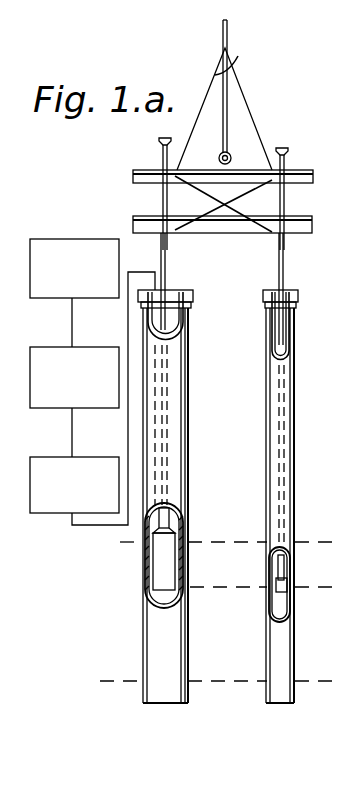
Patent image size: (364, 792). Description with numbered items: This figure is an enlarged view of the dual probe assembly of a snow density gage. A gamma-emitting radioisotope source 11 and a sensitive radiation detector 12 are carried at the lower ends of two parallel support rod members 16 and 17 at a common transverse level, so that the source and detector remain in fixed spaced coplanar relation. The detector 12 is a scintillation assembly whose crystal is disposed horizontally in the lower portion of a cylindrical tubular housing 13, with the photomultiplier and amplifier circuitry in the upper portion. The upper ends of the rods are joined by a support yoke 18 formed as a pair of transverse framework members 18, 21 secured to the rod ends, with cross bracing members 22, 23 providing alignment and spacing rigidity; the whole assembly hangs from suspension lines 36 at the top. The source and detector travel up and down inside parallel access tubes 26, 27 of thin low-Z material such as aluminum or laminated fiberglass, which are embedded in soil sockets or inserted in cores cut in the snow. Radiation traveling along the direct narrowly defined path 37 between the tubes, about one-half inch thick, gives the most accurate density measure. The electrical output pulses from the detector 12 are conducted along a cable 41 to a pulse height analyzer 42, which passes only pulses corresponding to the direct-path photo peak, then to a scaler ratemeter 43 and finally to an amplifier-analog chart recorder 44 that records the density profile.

The source 11 is at (288, 592).
The radiation detector 12 is at (170, 556).
The cylindrical tubular housing 13 is at (146, 600).
The support rod member 16 is at (284, 270).
The support rod member 17 is at (168, 282).
The support yoke 18 is at (313, 170).
The transverse framework member 21 is at (312, 217).
The cross bracing member 22 is at (239, 212).
The cross bracing member 23 is at (210, 210).
The access tube 26 is at (292, 352).
The access tube 27 is at (190, 346).
The suspension lines 36 is at (233, 52).
The direct narrowly defined path 37 is at (220, 585).
The cable 41 is at (80, 528).
The pulse height analyzer 42 is at (79, 457).
The scaler ratemeter 43 is at (79, 347).
The amplifier-analog chart recorder 44 is at (72, 237).